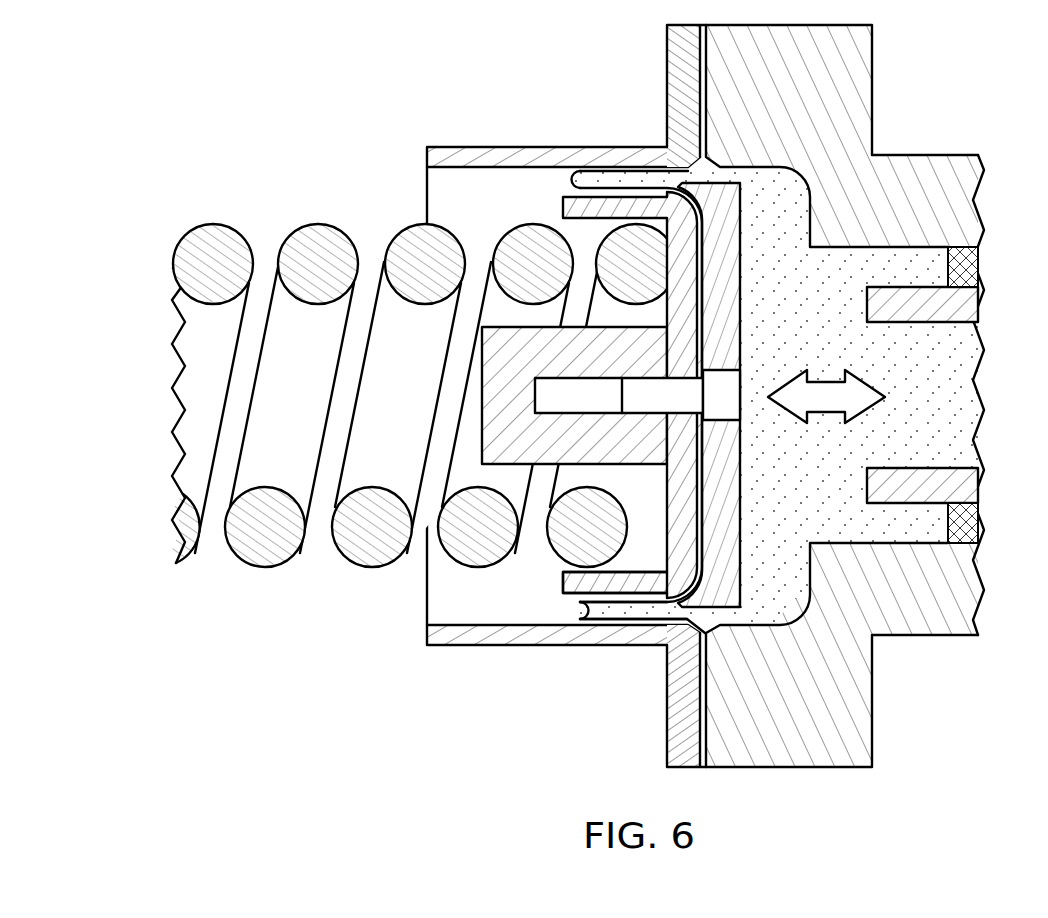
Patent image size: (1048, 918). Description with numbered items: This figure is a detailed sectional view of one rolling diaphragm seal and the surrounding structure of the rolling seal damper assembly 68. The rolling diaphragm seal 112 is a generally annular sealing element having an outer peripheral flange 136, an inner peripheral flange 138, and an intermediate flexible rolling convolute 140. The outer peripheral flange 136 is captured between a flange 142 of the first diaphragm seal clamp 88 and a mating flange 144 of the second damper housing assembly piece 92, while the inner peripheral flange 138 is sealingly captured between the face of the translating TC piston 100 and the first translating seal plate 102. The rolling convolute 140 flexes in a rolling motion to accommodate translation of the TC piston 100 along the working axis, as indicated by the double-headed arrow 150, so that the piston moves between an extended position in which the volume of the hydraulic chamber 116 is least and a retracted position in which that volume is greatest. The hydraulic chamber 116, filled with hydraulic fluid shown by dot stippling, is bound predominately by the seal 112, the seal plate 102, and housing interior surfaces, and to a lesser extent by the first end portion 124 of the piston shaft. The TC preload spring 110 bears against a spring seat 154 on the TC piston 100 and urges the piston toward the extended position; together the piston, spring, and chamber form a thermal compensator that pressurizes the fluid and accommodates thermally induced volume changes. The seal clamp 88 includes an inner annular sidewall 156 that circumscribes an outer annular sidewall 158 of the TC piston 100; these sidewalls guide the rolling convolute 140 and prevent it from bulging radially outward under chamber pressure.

The rolling seal damper assembly 68 is at (389, 346).
The first diaphragm seal clamp 88 is at (560, 348).
The second damper housing assembly piece 92 is at (962, 352).
The translating TC piston 100 is at (482, 407).
The first translating seal plate 102 is at (748, 483).
The TC preload spring 110 is at (378, 567).
The first rolling diaphragm seal 112 is at (650, 344).
The first hydraulic chamber 116 is at (819, 529).
The first end portion of piston shaft 124 is at (947, 322).
The outer peripheral flange 136 is at (707, 108).
The inner peripheral flange 138 is at (649, 398).
The rolling convolute 140 is at (567, 184).
The flange of diaphragm seal clamp 142 is at (667, 52).
The mating flange 144 is at (873, 95).
The double-headed arrow 150 is at (822, 380).
The spring seat 154 is at (667, 265).
The inner annular sidewall 156 is at (620, 627).
The outer annular sidewall 158 is at (602, 596).